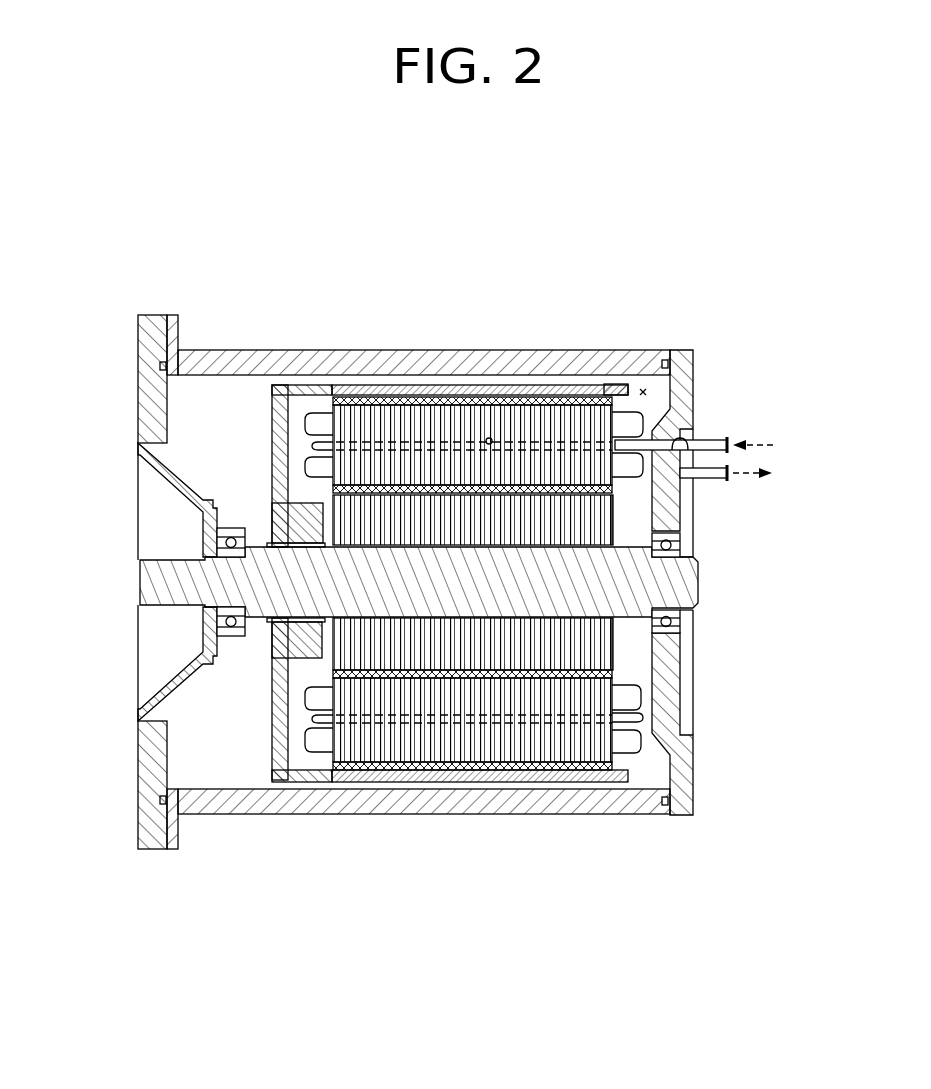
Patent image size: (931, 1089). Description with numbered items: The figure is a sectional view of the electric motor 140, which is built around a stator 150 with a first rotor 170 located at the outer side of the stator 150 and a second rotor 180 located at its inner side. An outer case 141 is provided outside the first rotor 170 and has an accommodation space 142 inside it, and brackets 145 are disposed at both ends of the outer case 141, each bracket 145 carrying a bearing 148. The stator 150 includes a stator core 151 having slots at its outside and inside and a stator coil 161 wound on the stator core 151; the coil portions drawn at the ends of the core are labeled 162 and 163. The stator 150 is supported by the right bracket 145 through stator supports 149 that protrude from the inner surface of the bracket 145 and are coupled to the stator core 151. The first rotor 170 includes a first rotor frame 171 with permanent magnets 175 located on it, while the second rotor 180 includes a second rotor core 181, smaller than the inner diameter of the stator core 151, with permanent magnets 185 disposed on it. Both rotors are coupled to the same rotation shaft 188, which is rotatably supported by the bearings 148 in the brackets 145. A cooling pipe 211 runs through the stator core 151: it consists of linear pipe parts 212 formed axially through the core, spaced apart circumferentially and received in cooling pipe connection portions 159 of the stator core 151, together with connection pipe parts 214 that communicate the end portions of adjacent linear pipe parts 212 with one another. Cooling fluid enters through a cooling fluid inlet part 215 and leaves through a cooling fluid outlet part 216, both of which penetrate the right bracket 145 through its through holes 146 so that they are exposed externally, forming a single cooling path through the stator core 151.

The electric motor 140 is at (196, 259).
The outer case 141 is at (604, 339).
The accommodation space 142 is at (646, 389).
The bracket 145 is at (138, 398).
The through hole 146 is at (693, 437).
The bearing 148 is at (207, 529).
The stator support 149 is at (643, 717).
The stator 150 is at (441, 690).
The stator core 151 is at (368, 745).
The cooling pipe connection portion 159 is at (489, 438).
The stator coil 161 is at (441, 678).
The second coil portion 162 is at (313, 743).
The first coil portion 163 is at (312, 698).
The first rotor 170 is at (435, 501).
The first rotor frame 171 is at (274, 444).
The permanent magnet 175 is at (327, 393).
The second rotor 180 is at (473, 720).
The second rotor core 181 is at (482, 655).
The permanent magnet 185 is at (527, 690).
The rotation shaft 188 is at (157, 582).
The cooling pipe 211 is at (462, 474).
The linear pipe part 212 is at (419, 440).
The connection pipe part 214 is at (337, 442).
The cooling fluid inlet part 215 is at (708, 440).
The cooling fluid outlet part 216 is at (710, 478).